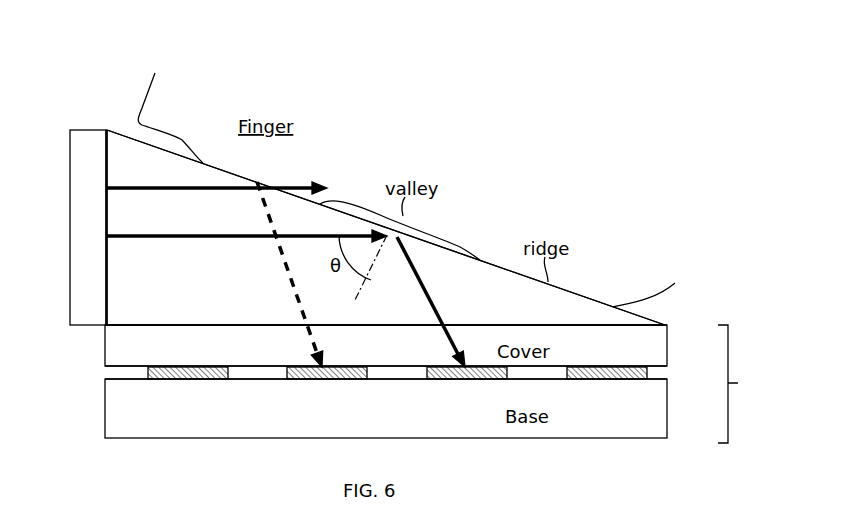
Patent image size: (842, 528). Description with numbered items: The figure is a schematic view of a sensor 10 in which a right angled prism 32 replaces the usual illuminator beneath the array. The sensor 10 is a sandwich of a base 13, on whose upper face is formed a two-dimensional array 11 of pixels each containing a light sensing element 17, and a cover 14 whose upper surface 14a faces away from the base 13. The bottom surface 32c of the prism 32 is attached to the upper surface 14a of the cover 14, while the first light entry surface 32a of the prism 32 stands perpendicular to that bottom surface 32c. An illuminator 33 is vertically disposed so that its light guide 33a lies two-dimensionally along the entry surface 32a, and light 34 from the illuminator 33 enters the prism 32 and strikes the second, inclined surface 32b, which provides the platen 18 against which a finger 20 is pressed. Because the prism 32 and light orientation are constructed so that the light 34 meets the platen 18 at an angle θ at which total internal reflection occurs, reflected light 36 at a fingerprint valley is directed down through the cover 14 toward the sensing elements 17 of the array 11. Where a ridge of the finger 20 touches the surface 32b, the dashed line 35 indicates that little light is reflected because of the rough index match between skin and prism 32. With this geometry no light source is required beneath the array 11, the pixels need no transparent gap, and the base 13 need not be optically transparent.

The sensor 10 is at (743, 384).
The array 11 is at (672, 366).
The base 13 is at (667, 408).
The cover 14 is at (667, 342).
The upper surface of cover 14a is at (163, 326).
The sensing element 17 is at (182, 381).
The platen 18 is at (662, 310).
The finger 20 is at (146, 80).
The right angled prism 32 is at (131, 131).
The first light entry surface of prism 32a is at (107, 277).
The second surface of prism 32b is at (513, 272).
The bottom surface of prism 32c is at (262, 324).
The illuminator 33 is at (70, 168).
The light guide 33a is at (70, 277).
The light 34 is at (199, 234).
The dashed line 35 is at (283, 250).
The reflected light 36 is at (430, 280).